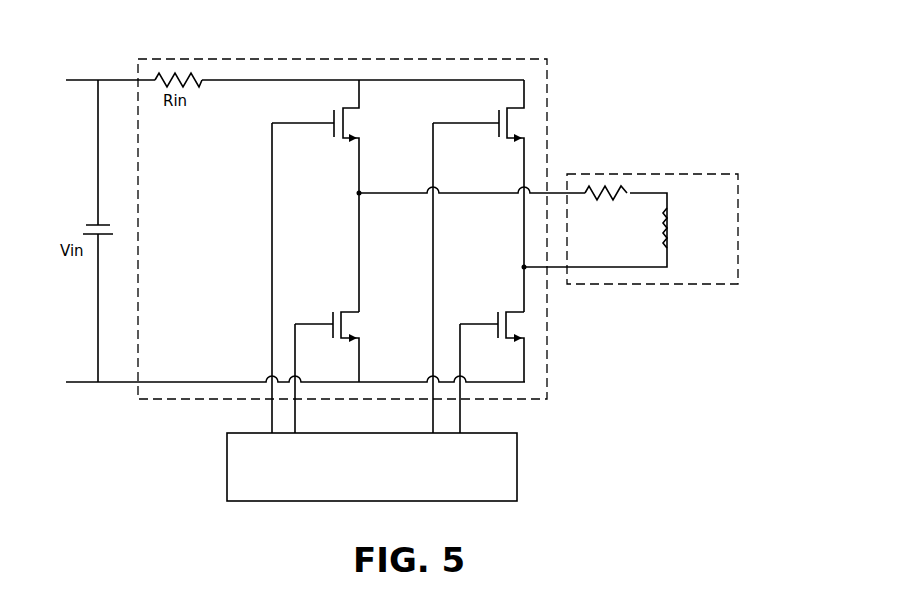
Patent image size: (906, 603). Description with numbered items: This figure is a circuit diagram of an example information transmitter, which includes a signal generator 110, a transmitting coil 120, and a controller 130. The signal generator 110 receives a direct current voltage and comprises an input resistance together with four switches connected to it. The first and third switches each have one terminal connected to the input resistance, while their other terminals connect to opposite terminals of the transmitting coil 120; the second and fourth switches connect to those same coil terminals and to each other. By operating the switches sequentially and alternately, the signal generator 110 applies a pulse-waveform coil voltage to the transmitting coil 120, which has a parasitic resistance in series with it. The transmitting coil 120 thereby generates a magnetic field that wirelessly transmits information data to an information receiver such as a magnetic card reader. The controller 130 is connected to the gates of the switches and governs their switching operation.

The signal generator 110 is at (510, 58).
The transmitting coil 120 is at (703, 174).
The controller 130 is at (517, 462).